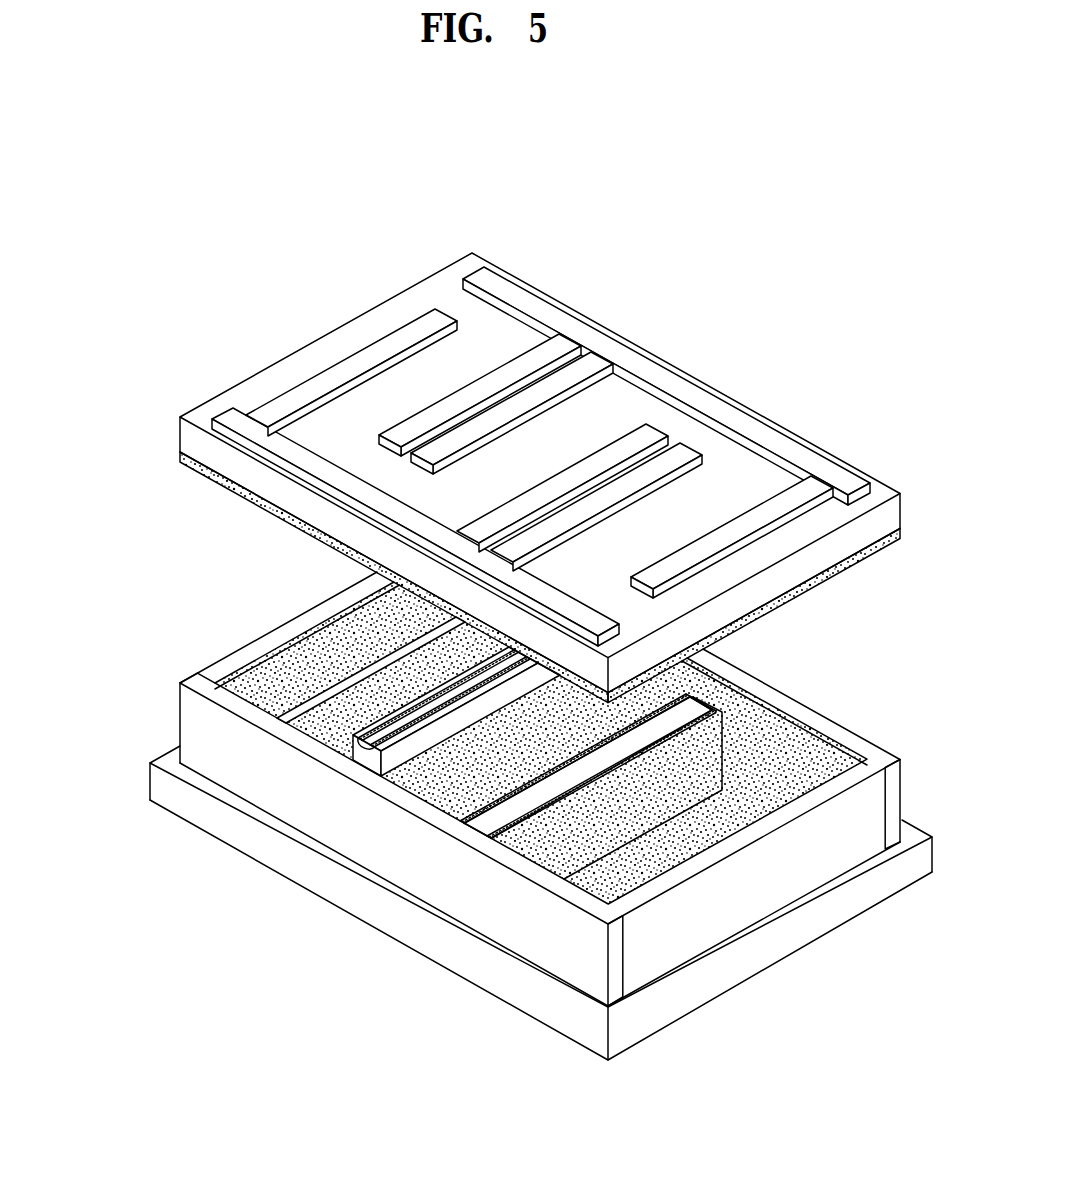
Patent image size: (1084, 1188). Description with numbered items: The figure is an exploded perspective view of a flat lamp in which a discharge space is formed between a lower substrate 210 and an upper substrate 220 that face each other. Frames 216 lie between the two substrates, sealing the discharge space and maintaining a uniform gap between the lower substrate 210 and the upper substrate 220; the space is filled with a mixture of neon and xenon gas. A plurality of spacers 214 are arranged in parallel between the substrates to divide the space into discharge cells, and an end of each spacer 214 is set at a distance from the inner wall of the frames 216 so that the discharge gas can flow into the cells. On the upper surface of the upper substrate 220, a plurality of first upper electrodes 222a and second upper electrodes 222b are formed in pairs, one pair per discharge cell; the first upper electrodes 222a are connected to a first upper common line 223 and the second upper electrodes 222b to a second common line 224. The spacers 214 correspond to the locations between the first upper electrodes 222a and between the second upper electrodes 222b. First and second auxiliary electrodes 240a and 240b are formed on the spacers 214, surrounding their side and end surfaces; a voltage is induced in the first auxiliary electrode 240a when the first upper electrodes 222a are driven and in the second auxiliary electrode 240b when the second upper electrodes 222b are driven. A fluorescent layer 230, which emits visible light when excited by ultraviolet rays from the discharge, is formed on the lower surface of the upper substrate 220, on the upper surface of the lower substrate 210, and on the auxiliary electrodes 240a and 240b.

The lower substrate 210 is at (165, 782).
The spacer 214 is at (463, 833).
The frame 216 is at (193, 718).
The upper substrate 220 is at (182, 432).
The first upper electrode 222a is at (607, 360).
The second upper electrode 222b is at (433, 316).
The first upper common line 223 is at (511, 286).
The second common line 224 is at (230, 416).
The fluorescent layer 230 is at (182, 458).
The first auxiliary electrode 240a is at (353, 762).
The second auxiliary electrode 240b is at (734, 692).